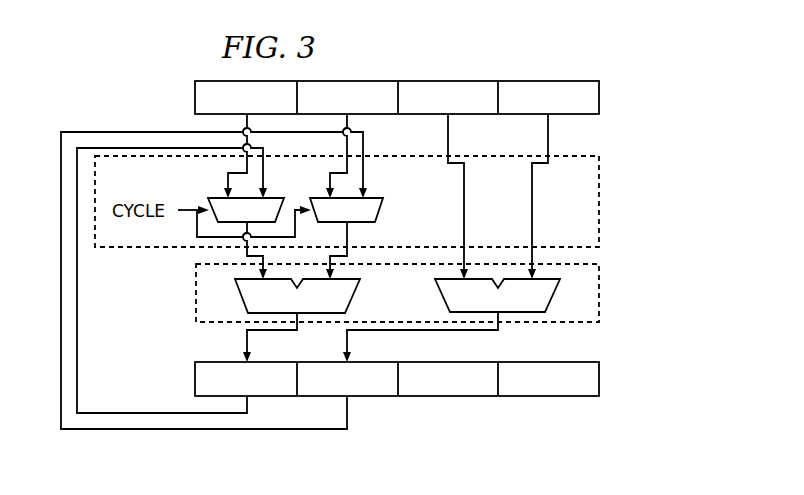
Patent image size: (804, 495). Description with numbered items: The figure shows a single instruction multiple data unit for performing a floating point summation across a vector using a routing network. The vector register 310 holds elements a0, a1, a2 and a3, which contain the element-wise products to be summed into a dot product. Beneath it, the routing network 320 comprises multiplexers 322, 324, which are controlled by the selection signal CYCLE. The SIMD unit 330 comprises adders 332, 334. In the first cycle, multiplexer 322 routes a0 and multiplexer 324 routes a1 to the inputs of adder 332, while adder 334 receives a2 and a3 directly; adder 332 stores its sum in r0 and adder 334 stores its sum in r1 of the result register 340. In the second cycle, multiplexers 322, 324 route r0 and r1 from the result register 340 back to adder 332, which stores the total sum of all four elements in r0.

The vector register 310 is at (195, 100).
The routing network 320 is at (121, 248).
The multiplexer 322 is at (213, 198).
The multiplexer 324 is at (383, 210).
The SIMD unit 330 is at (196, 316).
The adder 332 is at (360, 280).
The adder 334 is at (444, 301).
The result register 340 is at (195, 382).